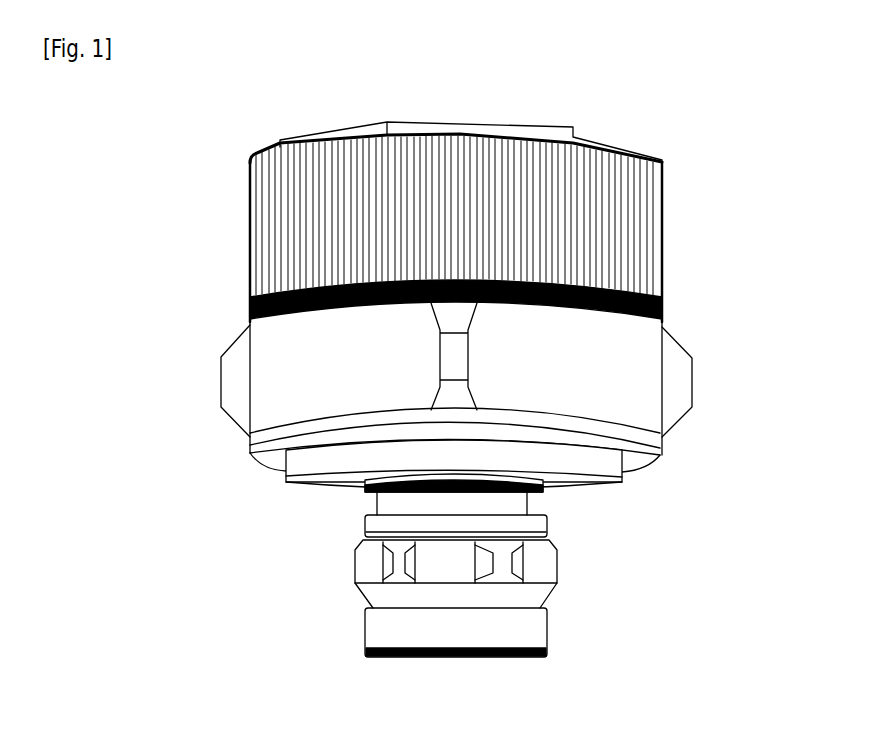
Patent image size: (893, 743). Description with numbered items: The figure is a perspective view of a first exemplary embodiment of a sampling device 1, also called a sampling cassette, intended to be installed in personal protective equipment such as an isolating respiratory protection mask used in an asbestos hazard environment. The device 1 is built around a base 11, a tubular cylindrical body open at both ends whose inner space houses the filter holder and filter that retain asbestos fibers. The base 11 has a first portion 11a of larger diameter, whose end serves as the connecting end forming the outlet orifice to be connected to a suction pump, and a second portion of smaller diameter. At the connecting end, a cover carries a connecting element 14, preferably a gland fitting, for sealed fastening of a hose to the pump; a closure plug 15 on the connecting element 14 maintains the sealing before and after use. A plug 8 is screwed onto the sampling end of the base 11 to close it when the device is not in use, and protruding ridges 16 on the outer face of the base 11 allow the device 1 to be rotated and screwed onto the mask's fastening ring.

The sampling device 1 is at (429, 389).
The plug 8 is at (313, 213).
The base 11 is at (282, 410).
The first portion 11a is at (625, 372).
The connecting element 14 is at (523, 533).
The closure plug 15 is at (498, 635).
The protruding ridges 16 is at (237, 386).